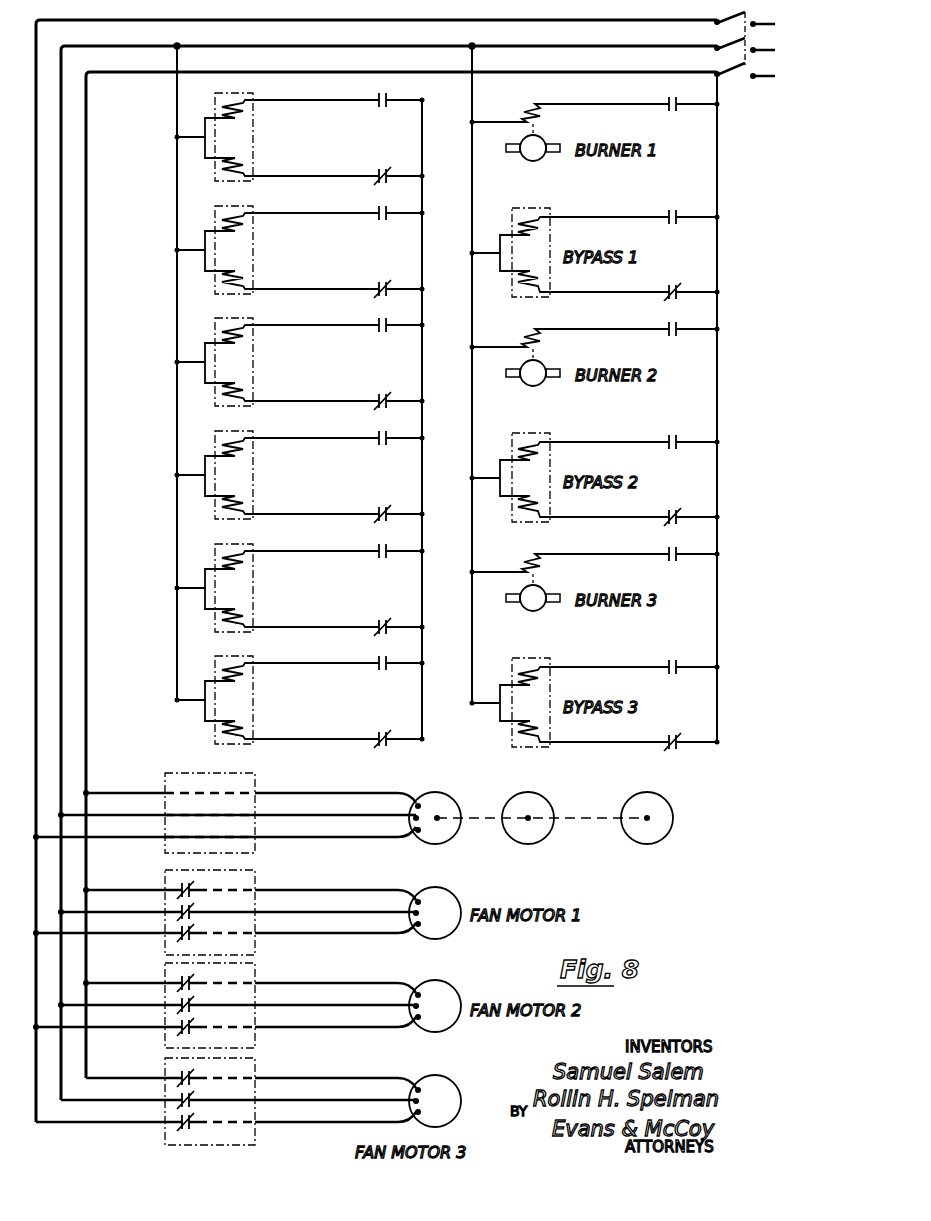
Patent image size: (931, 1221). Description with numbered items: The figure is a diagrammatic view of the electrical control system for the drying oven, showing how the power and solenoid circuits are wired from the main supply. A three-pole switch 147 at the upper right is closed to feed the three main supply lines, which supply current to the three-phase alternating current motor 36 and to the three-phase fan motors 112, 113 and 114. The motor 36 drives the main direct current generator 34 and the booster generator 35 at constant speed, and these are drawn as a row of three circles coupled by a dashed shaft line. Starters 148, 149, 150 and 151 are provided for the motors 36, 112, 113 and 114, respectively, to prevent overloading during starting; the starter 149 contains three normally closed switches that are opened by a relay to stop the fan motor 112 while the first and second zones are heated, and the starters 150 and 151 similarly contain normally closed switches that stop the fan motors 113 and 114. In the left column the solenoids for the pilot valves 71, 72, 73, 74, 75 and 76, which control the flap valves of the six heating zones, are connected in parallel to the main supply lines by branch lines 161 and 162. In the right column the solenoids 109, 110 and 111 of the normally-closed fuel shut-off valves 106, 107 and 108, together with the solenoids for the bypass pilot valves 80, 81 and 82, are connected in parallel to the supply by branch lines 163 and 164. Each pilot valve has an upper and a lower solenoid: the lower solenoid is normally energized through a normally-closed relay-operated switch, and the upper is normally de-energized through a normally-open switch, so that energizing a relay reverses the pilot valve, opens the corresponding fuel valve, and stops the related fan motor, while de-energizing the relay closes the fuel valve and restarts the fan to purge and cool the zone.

The main direct current generator 34 is at (545, 804).
The booster generator 35 is at (670, 806).
The three-phase alternating current motor 36 is at (446, 791).
The solenoid-operated pilot valve 71 is at (255, 133).
The solenoid-operated pilot valve 72 is at (300, 246).
The solenoid-operated pilot valve 73 is at (300, 358).
The solenoid-operated pilot valve 74 is at (300, 471).
The solenoid-operated pilot valve 75 is at (300, 584).
The solenoid-operated pilot valve 76 is at (300, 696).
The solenoid-operated pilot valve 80 is at (540, 211).
The solenoid-operated pilot valve 81 is at (595, 470).
The solenoid-operated pilot valve 82 is at (595, 695).
The solenoid-operated shut-off valve 106 is at (518, 165).
The solenoid-operated shut-off valve 107 is at (525, 380).
The solenoid-operated shut-off valve 108 is at (525, 605).
The solenoid 109 is at (531, 102).
The solenoid 110 is at (595, 327).
The solenoid 111 is at (595, 552).
The three-phase electric motor 112 is at (457, 901).
The three-phase electric motor 113 is at (457, 995).
The three-phase electric motor 114 is at (452, 1090).
The three-pole switch 147 is at (725, 80).
The starter 148 is at (174, 770).
The starter 149 is at (258, 882).
The starter 150 is at (258, 975).
The starter 151 is at (258, 1068).
The branch line 161 is at (177, 301).
The branch line 162 is at (422, 360).
The branch line 163 is at (472, 438).
The branch line 164 is at (717, 419).